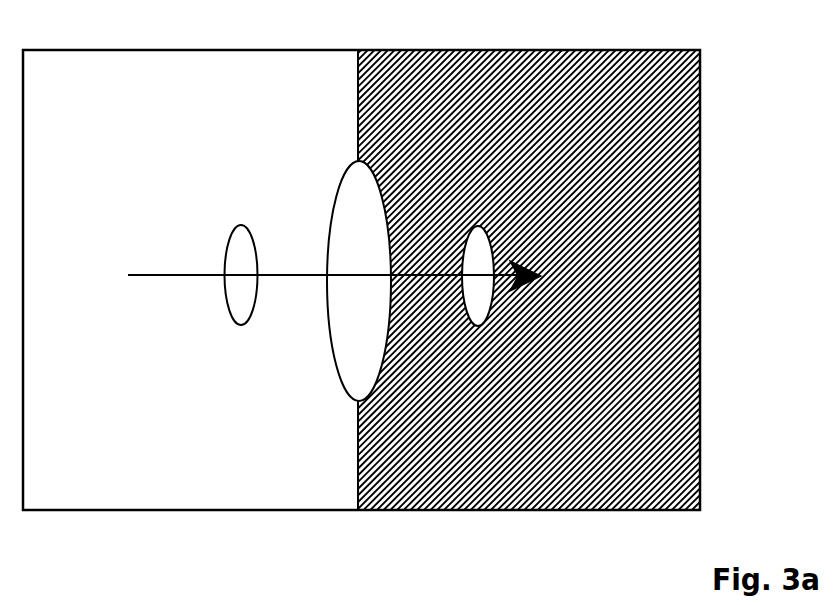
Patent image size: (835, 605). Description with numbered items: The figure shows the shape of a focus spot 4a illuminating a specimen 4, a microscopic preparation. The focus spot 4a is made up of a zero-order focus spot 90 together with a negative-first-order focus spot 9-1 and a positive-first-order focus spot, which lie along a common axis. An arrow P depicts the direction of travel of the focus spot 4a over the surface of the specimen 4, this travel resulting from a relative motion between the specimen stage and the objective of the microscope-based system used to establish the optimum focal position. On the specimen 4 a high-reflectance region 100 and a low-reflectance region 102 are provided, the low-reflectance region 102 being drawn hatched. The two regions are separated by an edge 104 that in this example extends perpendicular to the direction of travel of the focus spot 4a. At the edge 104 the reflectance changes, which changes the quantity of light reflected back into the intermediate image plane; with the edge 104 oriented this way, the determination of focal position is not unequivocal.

The high-reflectance region 100 is at (203, 63).
The low-reflectance region 102 is at (537, 68).
The specimen 4 is at (372, 50).
The focus spot 4a is at (342, 191).
The edge 104 is at (356, 427).
The negative-first-order focus spot 9-1 is at (236, 247).
The zero-order focus spot 90 is at (338, 335).
The arrow P is at (172, 273).